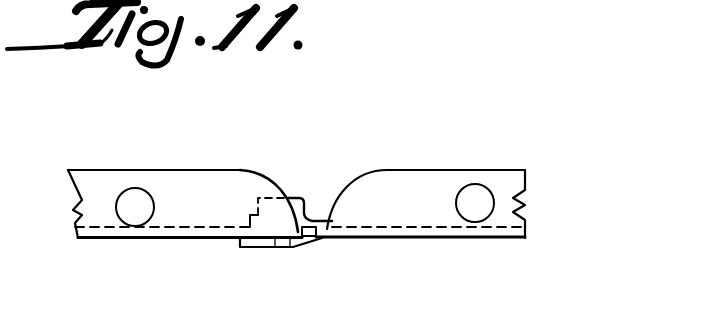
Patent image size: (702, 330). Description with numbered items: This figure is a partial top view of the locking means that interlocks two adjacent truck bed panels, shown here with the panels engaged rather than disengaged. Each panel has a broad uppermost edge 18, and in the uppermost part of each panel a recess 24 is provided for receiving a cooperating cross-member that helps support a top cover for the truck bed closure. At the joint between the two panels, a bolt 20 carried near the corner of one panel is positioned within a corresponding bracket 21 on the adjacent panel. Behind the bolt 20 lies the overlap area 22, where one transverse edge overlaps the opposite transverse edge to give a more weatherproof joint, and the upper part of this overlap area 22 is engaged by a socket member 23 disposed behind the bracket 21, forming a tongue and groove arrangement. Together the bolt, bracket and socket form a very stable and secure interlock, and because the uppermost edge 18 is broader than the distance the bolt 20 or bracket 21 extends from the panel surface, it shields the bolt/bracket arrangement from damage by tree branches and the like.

The uppermost edge 18 is at (196, 190).
The bolt 20 is at (273, 247).
The bracket 21 is at (287, 194).
The overlap area 22 is at (292, 245).
The socket member 23 is at (260, 247).
The recess 24 is at (137, 200).